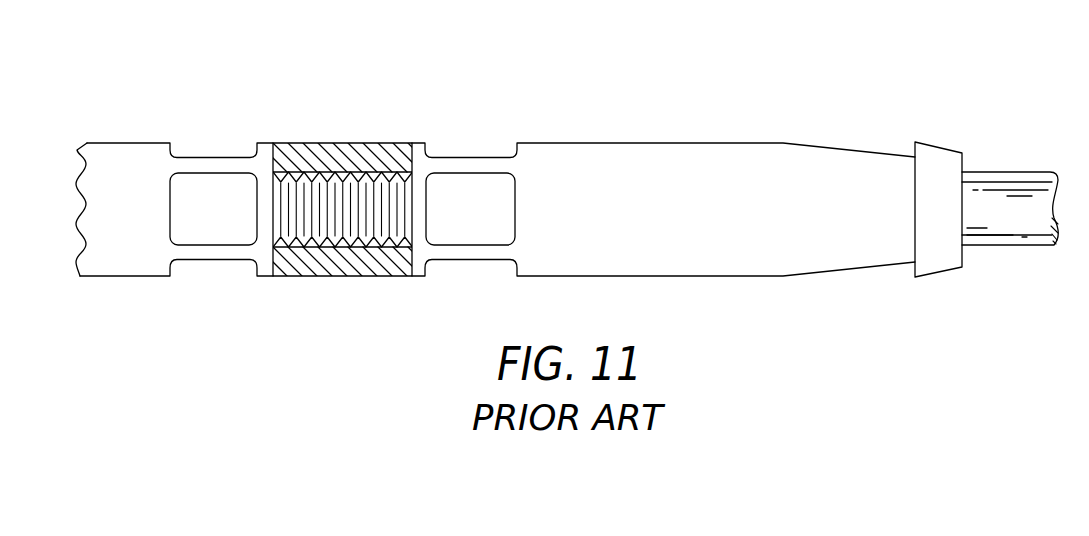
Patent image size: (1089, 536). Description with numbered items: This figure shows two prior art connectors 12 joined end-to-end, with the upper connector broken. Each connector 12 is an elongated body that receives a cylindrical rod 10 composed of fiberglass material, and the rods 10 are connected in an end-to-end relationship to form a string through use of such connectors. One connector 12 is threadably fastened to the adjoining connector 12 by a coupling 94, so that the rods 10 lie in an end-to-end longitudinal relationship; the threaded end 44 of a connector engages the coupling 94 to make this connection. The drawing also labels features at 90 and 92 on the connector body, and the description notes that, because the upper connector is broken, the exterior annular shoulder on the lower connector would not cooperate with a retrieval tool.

The cylindrical rod 10 is at (1012, 183).
The connector 12 is at (100, 143).
The threaded end 44 is at (348, 177).
The collar 90 is at (913, 150).
The wrench flat recess 92 is at (137, 160).
The coupling 94 is at (313, 142).